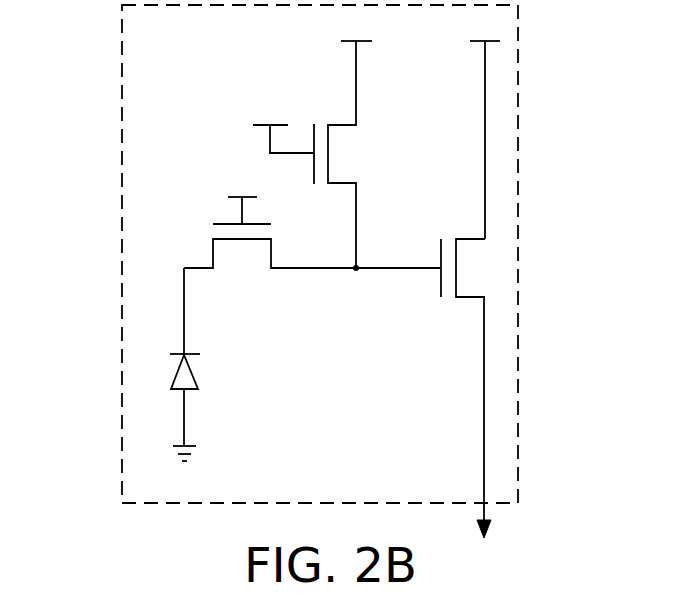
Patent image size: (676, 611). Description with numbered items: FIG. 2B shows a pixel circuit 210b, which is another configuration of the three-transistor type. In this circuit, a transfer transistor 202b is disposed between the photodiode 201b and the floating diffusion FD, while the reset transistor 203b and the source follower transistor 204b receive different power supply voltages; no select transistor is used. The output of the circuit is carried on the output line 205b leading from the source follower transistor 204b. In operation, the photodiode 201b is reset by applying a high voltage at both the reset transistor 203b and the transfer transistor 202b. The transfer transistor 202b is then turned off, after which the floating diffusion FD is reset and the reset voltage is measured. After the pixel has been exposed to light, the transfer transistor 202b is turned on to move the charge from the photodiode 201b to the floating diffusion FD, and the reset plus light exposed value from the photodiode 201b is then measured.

The pixel circuit 210b is at (181, 28).
The photodiode 201b is at (172, 376).
The transfer transistor 202b is at (213, 248).
The reset transistor 203b is at (328, 124).
The source follower transistor 204b is at (480, 239).
The output line 205b is at (484, 438).
The floating diffusion FD is at (355, 272).